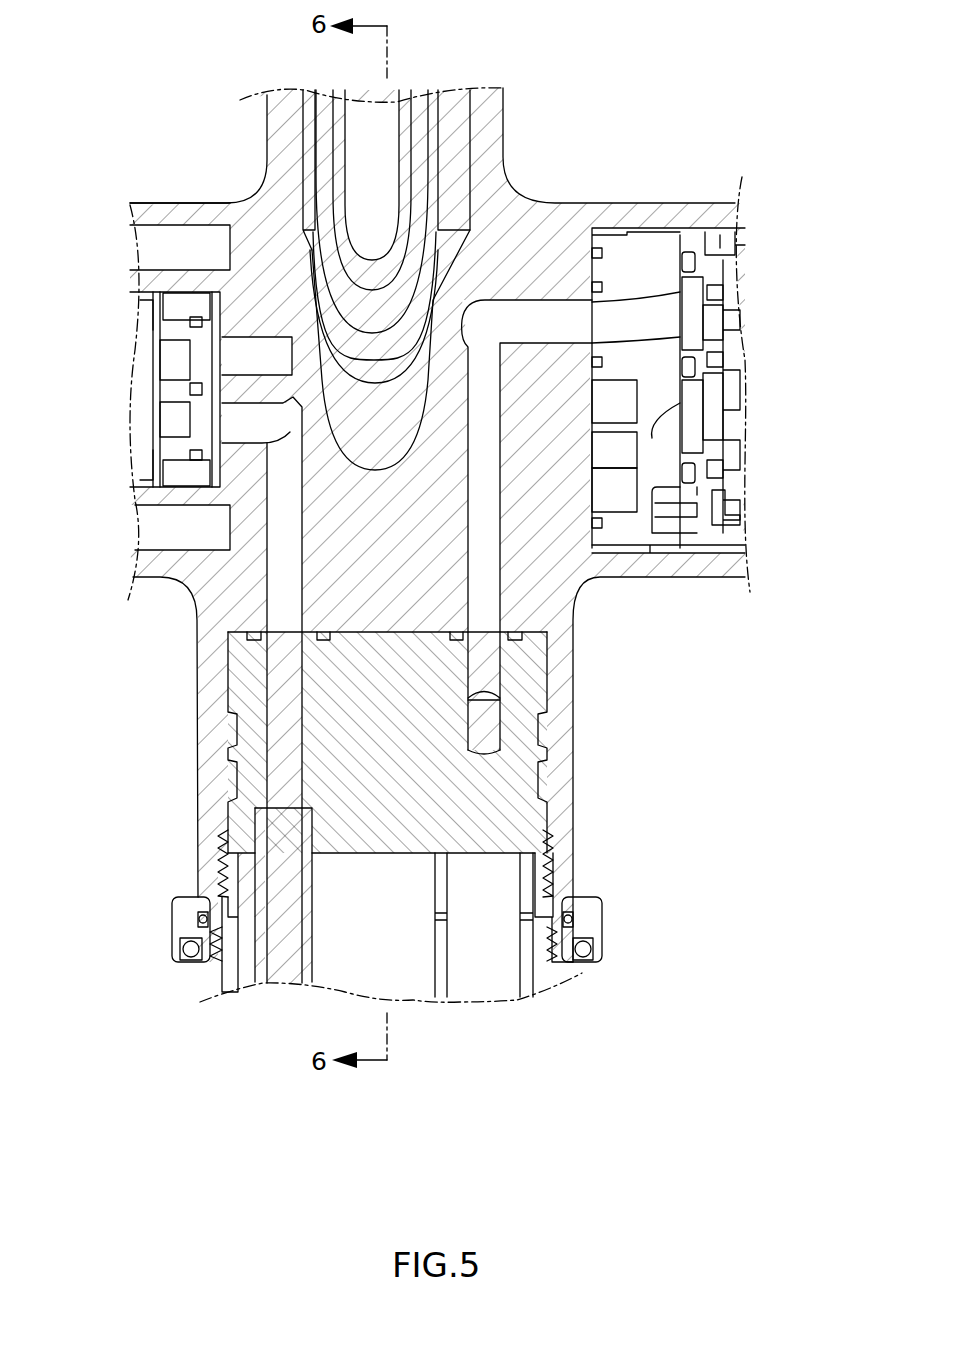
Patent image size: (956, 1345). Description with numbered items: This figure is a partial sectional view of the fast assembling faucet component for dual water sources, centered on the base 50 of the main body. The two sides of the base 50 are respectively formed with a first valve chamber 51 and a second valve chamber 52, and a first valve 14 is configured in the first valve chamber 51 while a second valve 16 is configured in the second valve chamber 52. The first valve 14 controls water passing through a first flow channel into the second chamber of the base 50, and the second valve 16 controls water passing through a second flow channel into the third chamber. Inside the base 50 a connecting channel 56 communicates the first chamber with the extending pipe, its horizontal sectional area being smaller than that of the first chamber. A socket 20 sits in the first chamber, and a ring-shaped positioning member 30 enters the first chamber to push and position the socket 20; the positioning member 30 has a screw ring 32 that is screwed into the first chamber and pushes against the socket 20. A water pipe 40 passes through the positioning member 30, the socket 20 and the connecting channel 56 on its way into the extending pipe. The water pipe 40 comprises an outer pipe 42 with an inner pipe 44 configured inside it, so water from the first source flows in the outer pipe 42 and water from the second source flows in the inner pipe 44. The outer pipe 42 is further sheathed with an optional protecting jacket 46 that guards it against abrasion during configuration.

The first valve 14 is at (720, 250).
The second valve 16 is at (150, 293).
The socket 20 is at (547, 668).
The positioning member 30 is at (207, 940).
The screw ring 32 is at (228, 876).
The water pipe 40 is at (306, 125).
The outer pipe 42 is at (430, 170).
The inner pipe 44 is at (405, 128).
The protecting jacket 46 is at (438, 152).
The base 50 is at (198, 788).
The first valve chamber 51 is at (622, 548).
The second valve chamber 52 is at (192, 228).
The connecting channel 56 is at (457, 212).